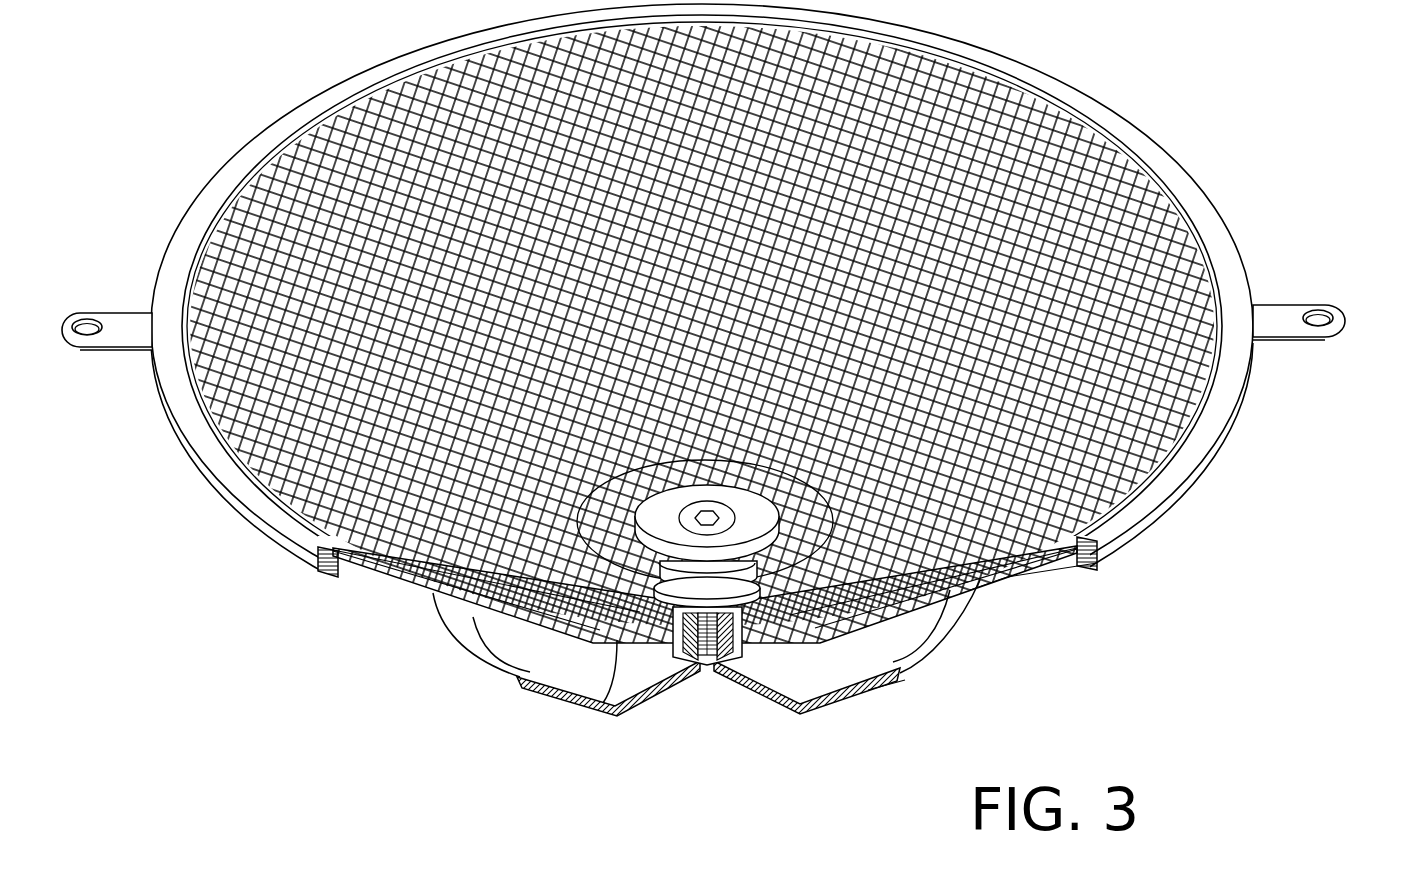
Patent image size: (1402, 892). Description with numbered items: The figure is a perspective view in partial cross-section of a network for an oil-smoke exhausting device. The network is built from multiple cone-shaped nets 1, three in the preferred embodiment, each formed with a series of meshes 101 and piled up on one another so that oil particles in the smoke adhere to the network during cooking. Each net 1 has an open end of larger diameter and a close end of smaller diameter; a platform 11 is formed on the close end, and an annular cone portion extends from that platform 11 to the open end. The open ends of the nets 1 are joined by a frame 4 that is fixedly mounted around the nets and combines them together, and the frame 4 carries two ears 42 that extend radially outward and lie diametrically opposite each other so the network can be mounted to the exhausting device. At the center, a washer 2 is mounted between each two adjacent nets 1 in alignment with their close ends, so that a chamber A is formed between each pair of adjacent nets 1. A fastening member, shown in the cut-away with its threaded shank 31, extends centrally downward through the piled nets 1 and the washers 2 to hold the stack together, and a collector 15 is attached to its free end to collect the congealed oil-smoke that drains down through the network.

The cone-shaped net 1 is at (487, 617).
The washer 2 is at (672, 600).
The frame 4 is at (1232, 267).
The platform 11 is at (597, 703).
The collector 15 is at (870, 693).
The screw 31 is at (703, 640).
The ear 42 is at (130, 329).
The mesh 101 is at (970, 590).
The chamber A is at (845, 645).